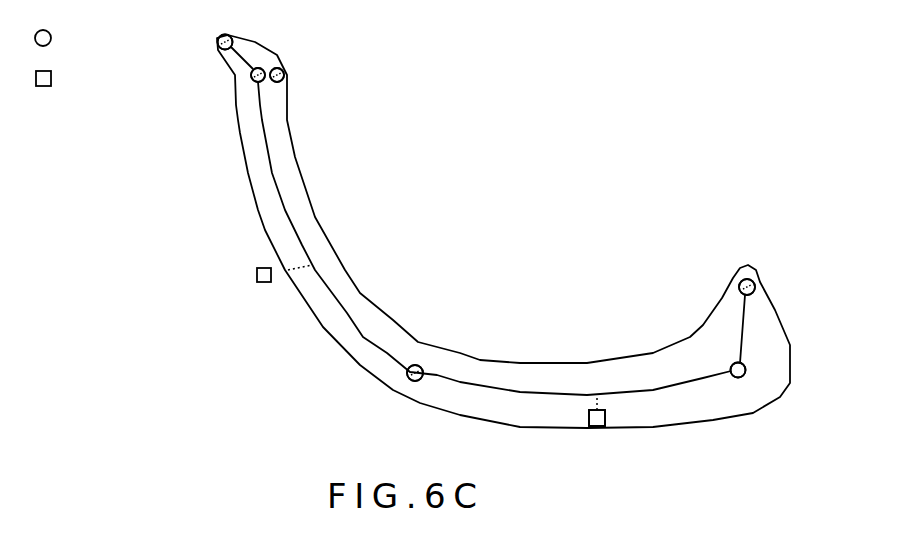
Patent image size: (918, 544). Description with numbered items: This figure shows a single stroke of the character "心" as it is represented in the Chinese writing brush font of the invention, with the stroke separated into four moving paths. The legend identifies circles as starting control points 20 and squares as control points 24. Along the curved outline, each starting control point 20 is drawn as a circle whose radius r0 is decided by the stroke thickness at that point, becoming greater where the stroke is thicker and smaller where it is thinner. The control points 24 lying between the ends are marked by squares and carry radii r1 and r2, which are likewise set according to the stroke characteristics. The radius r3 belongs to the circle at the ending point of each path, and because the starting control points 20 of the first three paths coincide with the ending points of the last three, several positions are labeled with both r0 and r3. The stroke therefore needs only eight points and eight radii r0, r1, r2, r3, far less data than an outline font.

The starting control point 20 is at (395, 205).
The control point 24 is at (320, 247).
The radius of circle for starting control point r0 is at (410, 378).
The radius of circle for control point r1 is at (328, 252).
The radius of circle for control point r2 is at (593, 428).
The radius of circle for ending control point r3 is at (777, 393).